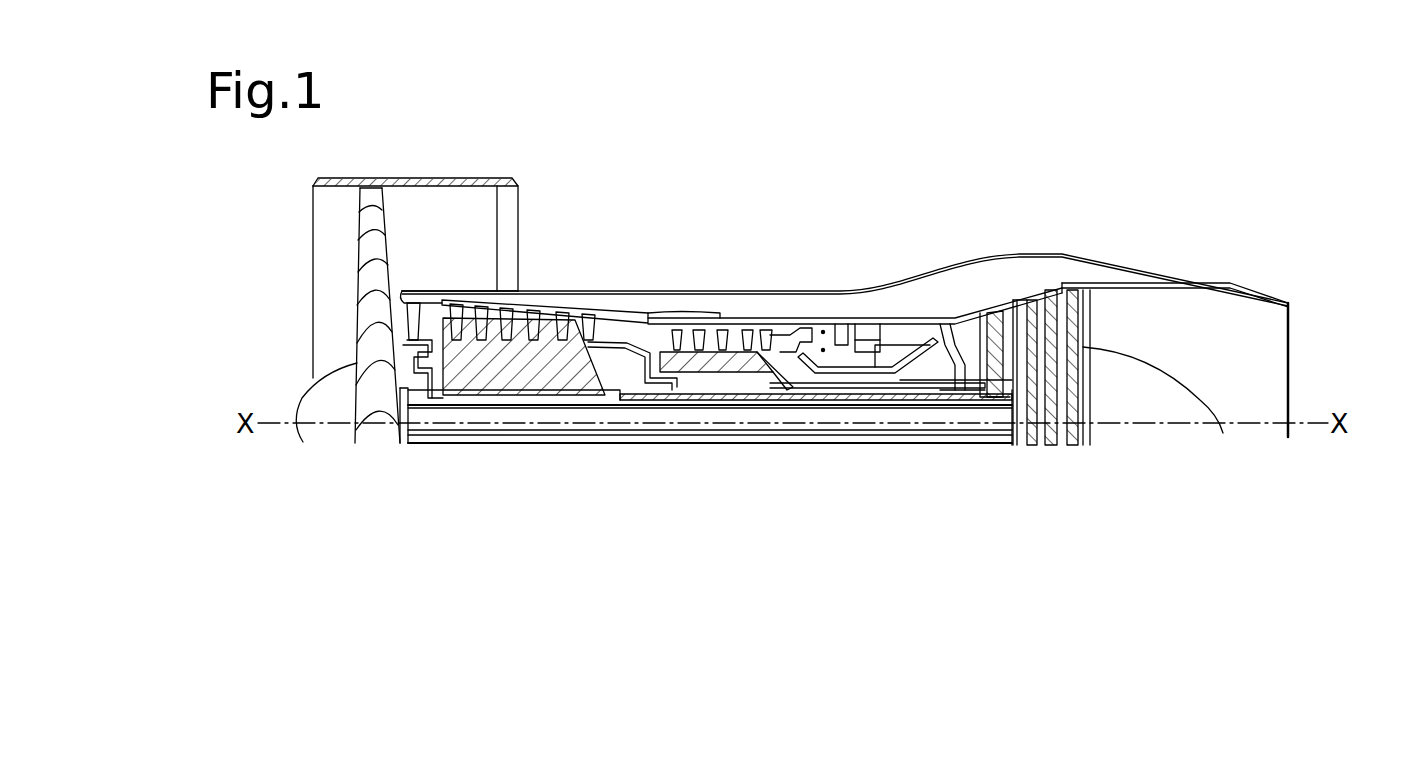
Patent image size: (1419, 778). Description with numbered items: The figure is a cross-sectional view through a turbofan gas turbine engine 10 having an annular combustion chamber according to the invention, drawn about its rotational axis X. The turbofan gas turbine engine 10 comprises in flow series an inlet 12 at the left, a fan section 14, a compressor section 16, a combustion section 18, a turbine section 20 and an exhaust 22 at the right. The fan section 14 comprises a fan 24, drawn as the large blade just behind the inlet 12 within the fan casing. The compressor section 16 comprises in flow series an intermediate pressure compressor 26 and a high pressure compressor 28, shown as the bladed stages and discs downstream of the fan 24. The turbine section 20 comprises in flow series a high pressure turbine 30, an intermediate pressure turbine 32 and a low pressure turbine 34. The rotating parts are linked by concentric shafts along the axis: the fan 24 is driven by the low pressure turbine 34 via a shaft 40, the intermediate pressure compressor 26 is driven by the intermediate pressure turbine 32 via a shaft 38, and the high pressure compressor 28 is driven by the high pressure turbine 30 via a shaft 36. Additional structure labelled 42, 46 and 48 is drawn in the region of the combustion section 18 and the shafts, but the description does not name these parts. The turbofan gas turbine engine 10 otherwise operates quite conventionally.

The turbofan gas turbine engine 10 is at (711, 207).
The inlet 12 is at (287, 292).
The fan section 14 is at (465, 183).
The compressor section 16 is at (594, 247).
The combustion section 18 is at (871, 316).
The turbine section 20 is at (1010, 233).
The exhaust 22 is at (1265, 383).
The fan 24 is at (380, 222).
The intermediate pressure compressor 26 is at (525, 353).
The high pressure compressor 28 is at (722, 328).
The high pressure turbine 30 is at (940, 322).
The intermediate pressure turbine 32 is at (1000, 320).
The low pressure turbine 34 is at (1053, 290).
The shaft 36 is at (931, 382).
The shaft 38 is at (642, 397).
The shaft 40 is at (703, 415).
The bearing housing 42 is at (823, 330).
The bearing 46 is at (845, 332).
The bearing element 48 is at (812, 325).